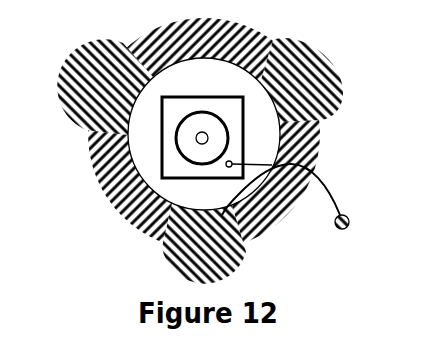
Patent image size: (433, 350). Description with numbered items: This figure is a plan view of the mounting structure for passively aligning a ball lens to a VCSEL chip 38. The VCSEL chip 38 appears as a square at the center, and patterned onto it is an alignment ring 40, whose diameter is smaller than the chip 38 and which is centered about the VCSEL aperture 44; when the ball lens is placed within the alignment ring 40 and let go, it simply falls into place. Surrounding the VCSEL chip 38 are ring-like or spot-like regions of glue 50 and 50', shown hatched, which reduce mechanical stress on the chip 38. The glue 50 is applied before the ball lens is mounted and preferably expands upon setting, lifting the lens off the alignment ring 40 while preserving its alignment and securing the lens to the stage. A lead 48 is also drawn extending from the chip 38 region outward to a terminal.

The VCSEL chip 38 is at (173, 164).
The alignment ring 40 is at (196, 138).
The aperture 44 is at (208, 138).
The lead wire 48 is at (332, 199).
The glue 50 is at (212, 146).
The clamp member 50' is at (343, 80).